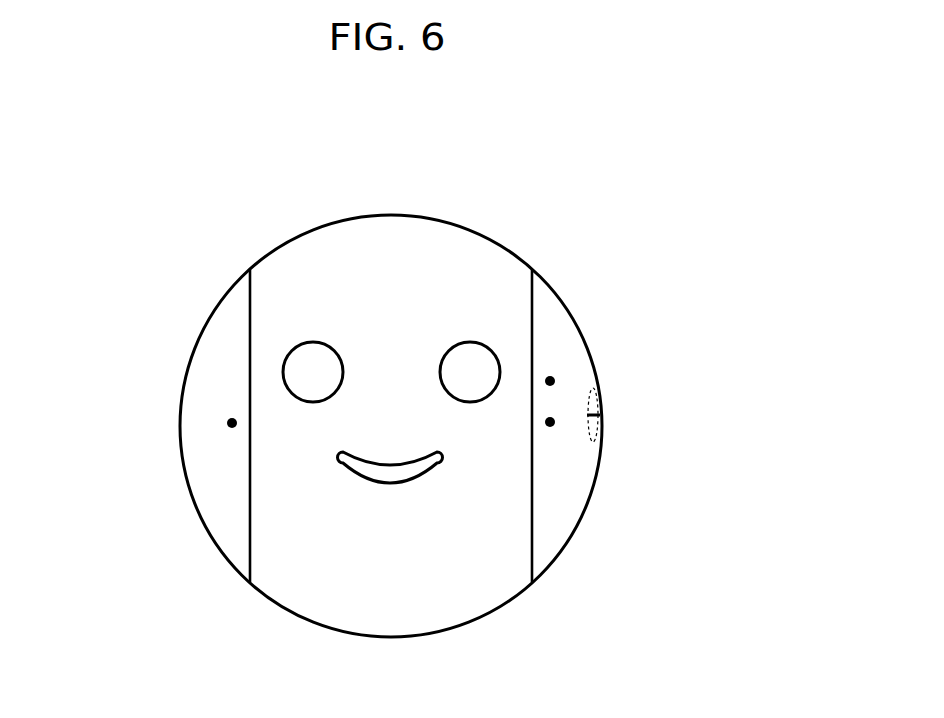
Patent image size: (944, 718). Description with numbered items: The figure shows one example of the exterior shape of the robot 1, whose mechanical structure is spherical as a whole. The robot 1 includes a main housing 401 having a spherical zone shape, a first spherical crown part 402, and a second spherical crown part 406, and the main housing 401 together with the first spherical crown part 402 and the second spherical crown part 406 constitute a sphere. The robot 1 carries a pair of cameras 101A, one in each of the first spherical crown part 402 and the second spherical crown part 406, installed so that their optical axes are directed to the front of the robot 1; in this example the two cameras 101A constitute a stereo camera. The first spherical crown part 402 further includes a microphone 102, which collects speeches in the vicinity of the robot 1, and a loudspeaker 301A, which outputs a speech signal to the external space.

The robot 1 is at (403, 194).
The main housing 401 is at (503, 245).
The first spherical crown part 402 is at (570, 329).
The second spherical crown part 406 is at (203, 383).
The microphone 102 is at (552, 380).
The camera 101A is at (230, 424).
The loudspeaker 301A is at (600, 413).